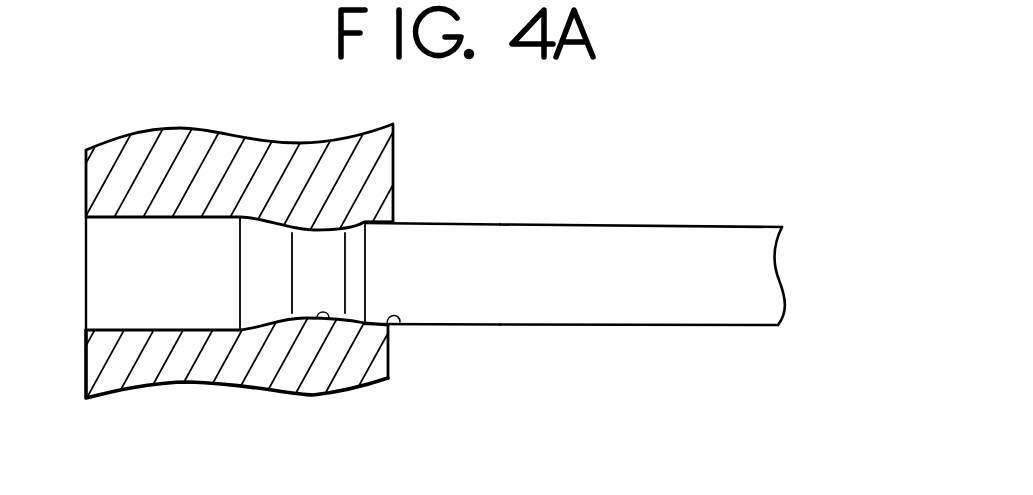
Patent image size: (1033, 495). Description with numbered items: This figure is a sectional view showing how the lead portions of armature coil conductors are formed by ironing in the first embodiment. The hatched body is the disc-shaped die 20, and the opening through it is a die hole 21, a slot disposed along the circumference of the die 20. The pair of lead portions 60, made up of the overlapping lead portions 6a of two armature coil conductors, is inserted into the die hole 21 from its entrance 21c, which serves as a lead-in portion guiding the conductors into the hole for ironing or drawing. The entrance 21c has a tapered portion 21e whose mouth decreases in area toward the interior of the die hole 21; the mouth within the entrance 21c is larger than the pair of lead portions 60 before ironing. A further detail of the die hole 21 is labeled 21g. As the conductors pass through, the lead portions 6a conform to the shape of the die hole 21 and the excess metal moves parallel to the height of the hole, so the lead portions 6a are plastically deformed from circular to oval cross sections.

The die hole 21 is at (248, 283).
The die 20 is at (197, 368).
The groove 21g is at (324, 313).
The tapered portion 21e is at (399, 320).
The entrance 21c is at (395, 222).
The lead portions 6a is at (480, 252).
The pair of lead portions 60 is at (575, 236).